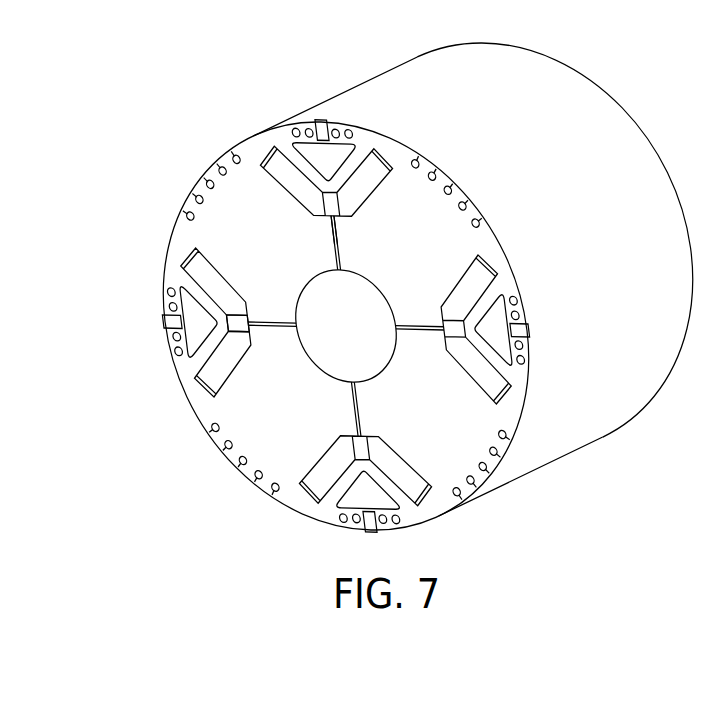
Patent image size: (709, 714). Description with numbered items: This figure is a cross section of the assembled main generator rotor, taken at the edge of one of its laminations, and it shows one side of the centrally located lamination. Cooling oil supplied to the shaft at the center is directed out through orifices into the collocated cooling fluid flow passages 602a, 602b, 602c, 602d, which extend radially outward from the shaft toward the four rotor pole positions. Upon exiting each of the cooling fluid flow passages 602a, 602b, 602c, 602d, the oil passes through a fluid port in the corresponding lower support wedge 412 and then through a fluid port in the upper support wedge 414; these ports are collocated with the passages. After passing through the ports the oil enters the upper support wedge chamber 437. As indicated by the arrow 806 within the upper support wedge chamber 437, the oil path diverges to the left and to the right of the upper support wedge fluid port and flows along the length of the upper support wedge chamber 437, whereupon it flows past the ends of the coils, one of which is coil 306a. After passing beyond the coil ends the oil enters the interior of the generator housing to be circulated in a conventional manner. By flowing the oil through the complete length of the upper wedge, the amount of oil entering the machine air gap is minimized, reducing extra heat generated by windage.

The coil 306a is at (364, 193).
The upper support wedge 414 is at (172, 282).
The lower support wedge 412 is at (246, 313).
The upper support wedge chamber 437 is at (357, 487).
The cooling fluid flow passage 602a is at (333, 251).
The cooling fluid flow passage 602b is at (422, 322).
The cooling fluid flow passage 602c is at (361, 401).
The cooling fluid flow passage 602d is at (273, 331).
The arrow 806 is at (335, 229).